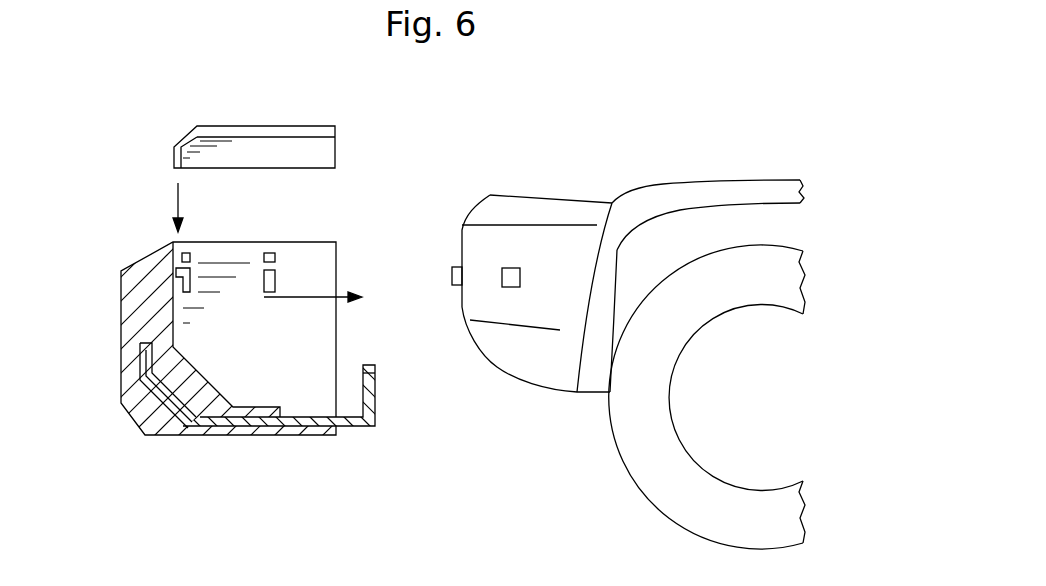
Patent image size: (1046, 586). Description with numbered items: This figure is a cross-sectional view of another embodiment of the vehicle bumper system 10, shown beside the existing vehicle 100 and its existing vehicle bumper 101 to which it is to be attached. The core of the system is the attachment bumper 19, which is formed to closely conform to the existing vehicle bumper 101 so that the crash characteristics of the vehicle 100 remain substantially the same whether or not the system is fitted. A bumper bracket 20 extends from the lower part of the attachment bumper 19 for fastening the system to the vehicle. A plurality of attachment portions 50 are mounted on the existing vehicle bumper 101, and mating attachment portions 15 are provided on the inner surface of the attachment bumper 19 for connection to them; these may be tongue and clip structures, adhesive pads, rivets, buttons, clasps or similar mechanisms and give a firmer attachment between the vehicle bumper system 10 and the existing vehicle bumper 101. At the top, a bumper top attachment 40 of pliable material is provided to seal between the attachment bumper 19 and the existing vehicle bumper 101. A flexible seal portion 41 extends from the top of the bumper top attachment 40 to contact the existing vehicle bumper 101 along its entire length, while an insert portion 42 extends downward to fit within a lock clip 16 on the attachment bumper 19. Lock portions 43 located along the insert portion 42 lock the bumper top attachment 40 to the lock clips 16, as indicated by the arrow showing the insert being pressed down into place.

The vehicle bumper system 10 is at (111, 447).
The mating attachment portion 15 is at (165, 261).
The lock clip 16 is at (165, 246).
The attachment bumper 19 is at (130, 353).
The bumper bracket 20 is at (312, 428).
The bumper top attachment 40 is at (160, 112).
The flexible seal portion 41 is at (184, 140).
The insert portion 42 is at (175, 159).
The lock portion 43 is at (185, 157).
The attachment portion 50 is at (452, 278).
The vehicle 100 is at (631, 138).
The existing vehicle bumper 101 is at (491, 210).